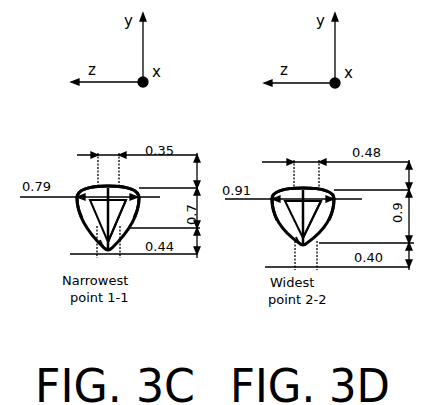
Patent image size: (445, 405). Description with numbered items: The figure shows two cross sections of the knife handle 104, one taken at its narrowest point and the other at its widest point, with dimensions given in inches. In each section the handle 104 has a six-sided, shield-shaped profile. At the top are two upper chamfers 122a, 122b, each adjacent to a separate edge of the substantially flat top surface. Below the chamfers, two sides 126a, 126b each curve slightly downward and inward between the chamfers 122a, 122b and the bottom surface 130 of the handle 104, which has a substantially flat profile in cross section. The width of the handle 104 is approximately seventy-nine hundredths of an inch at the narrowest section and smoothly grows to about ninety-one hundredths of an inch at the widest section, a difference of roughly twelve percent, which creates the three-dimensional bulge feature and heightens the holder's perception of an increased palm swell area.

In FIG. 3C, the handle 104 is at (128, 122).
In FIG. 3D, the handle 104 is at (322, 133).
In FIG. 3C, the upper chamfer 122a is at (88, 188).
In FIG. 3D, the upper chamfer 122a is at (283, 190).
In FIG. 3C, the upper chamfer 122b is at (134, 190).
In FIG. 3D, the upper chamfer 122b is at (332, 193).
In FIG. 3C, the side 126a is at (82, 224).
In FIG. 3D, the side 126a is at (282, 224).
In FIG. 3C, the side 126b is at (129, 212).
In FIG. 3D, the side 126b is at (357, 229).
In FIG. 3C, the bottom surface 130 is at (106, 246).
In FIG. 3D, the bottom surface 130 is at (303, 244).